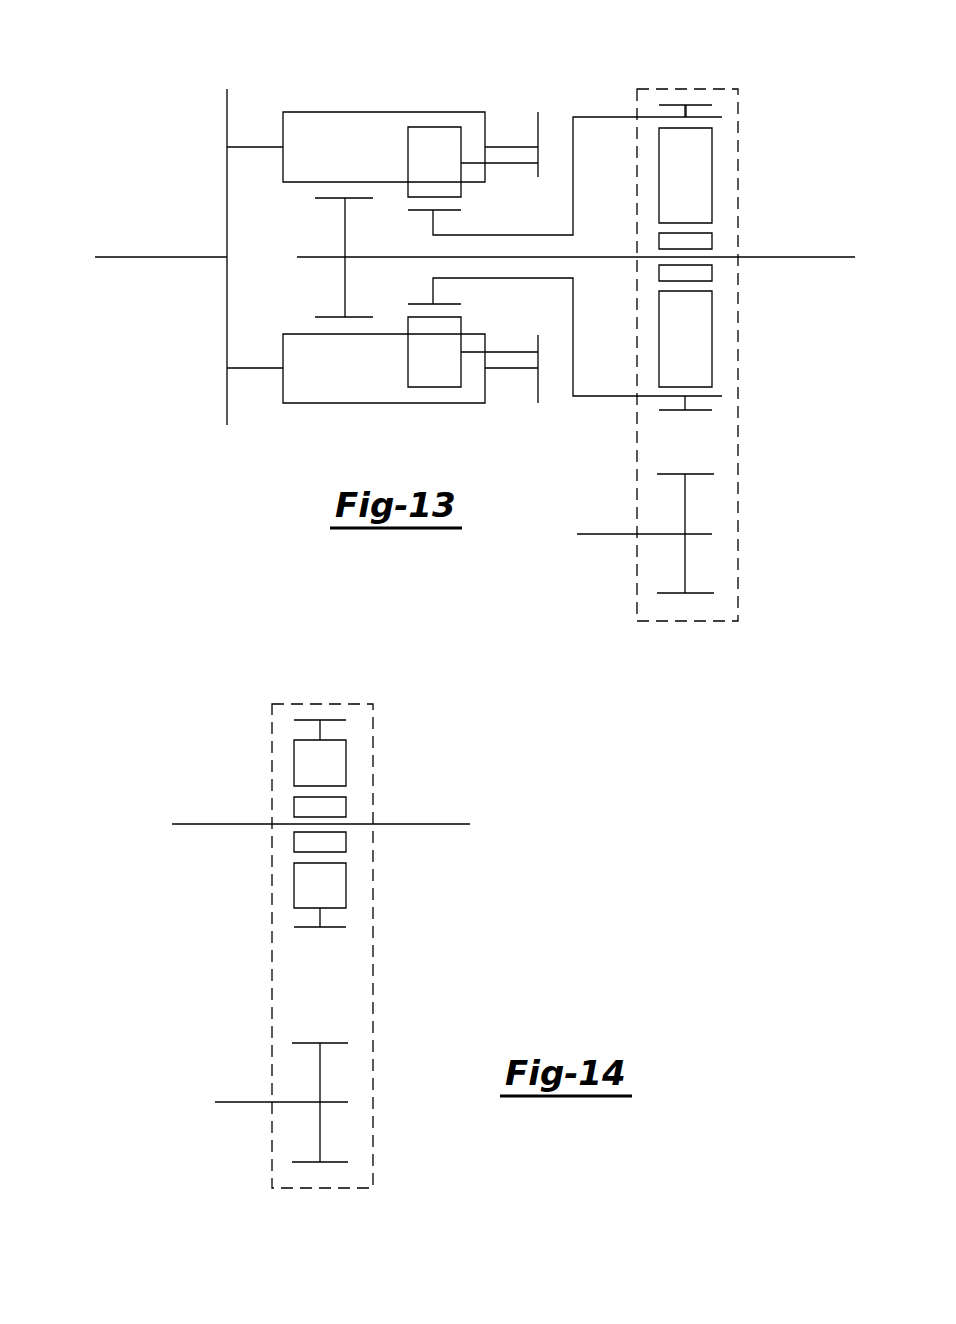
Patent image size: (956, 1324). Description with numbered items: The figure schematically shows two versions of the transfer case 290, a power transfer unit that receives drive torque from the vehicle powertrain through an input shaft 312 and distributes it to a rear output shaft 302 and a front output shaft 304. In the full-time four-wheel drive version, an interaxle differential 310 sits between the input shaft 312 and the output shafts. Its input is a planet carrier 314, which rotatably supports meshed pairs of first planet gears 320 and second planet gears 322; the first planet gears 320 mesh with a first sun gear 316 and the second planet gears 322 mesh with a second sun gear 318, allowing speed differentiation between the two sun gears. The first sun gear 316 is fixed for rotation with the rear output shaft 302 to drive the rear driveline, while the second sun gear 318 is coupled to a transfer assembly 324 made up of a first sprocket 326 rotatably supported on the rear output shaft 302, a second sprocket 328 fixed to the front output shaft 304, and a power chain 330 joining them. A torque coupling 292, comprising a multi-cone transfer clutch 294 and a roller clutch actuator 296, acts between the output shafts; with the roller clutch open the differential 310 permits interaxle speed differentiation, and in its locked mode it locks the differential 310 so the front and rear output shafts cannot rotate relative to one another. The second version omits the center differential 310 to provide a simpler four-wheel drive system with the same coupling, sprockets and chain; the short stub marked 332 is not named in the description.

In FIG. 13, the transfer case 290 is at (574, 44).
In FIG. 14, the transfer case 290 is at (237, 684).
In FIG. 13, the torque coupling 292 is at (752, 222).
In FIG. 14, the torque coupling 292 is at (317, 852).
In FIG. 13, the multi-cone transfer clutch 294 is at (716, 334).
In FIG. 14, the multi-cone transfer clutch 294 is at (357, 749).
In FIG. 13, the roller clutch actuator 296 is at (718, 238).
In FIG. 14, the roller clutch actuator 296 is at (357, 800).
In FIG. 13, the rear output shaft 302 is at (822, 260).
In FIG. 14, the rear output shaft 302 is at (447, 825).
In FIG. 13, the front output shaft 304 is at (589, 533).
In FIG. 14, the front output shaft 304 is at (228, 1100).
In FIG. 13, the interaxle differential 310 is at (410, 225).
In FIG. 13, the input shaft 312 is at (112, 257).
In FIG. 14, the input shaft 312 is at (183, 823).
In FIG. 13, the planet carrier 314 is at (227, 122).
In FIG. 13, the first sun gear 316 is at (345, 218).
In FIG. 13, the second sun gear 318 is at (437, 220).
In FIG. 13, the first planet gears 320 is at (312, 112).
In FIG. 13, the second planet gears 322 is at (408, 368).
In FIG. 13, the transfer assembly 324 is at (713, 504).
In FIG. 14, the transfer assembly 324 is at (354, 1072).
In FIG. 13, the first sprocket 326 is at (706, 104).
In FIG. 14, the first sprocket 326 is at (328, 928).
In FIG. 13, the second sprocket 328 is at (685, 503).
In FIG. 14, the second sprocket 328 is at (320, 1072).
In FIG. 13, the power chain 330 is at (703, 622).
In FIG. 14, the power chain 330 is at (273, 1178).
In FIG. 13, the connection 332 is at (688, 112).